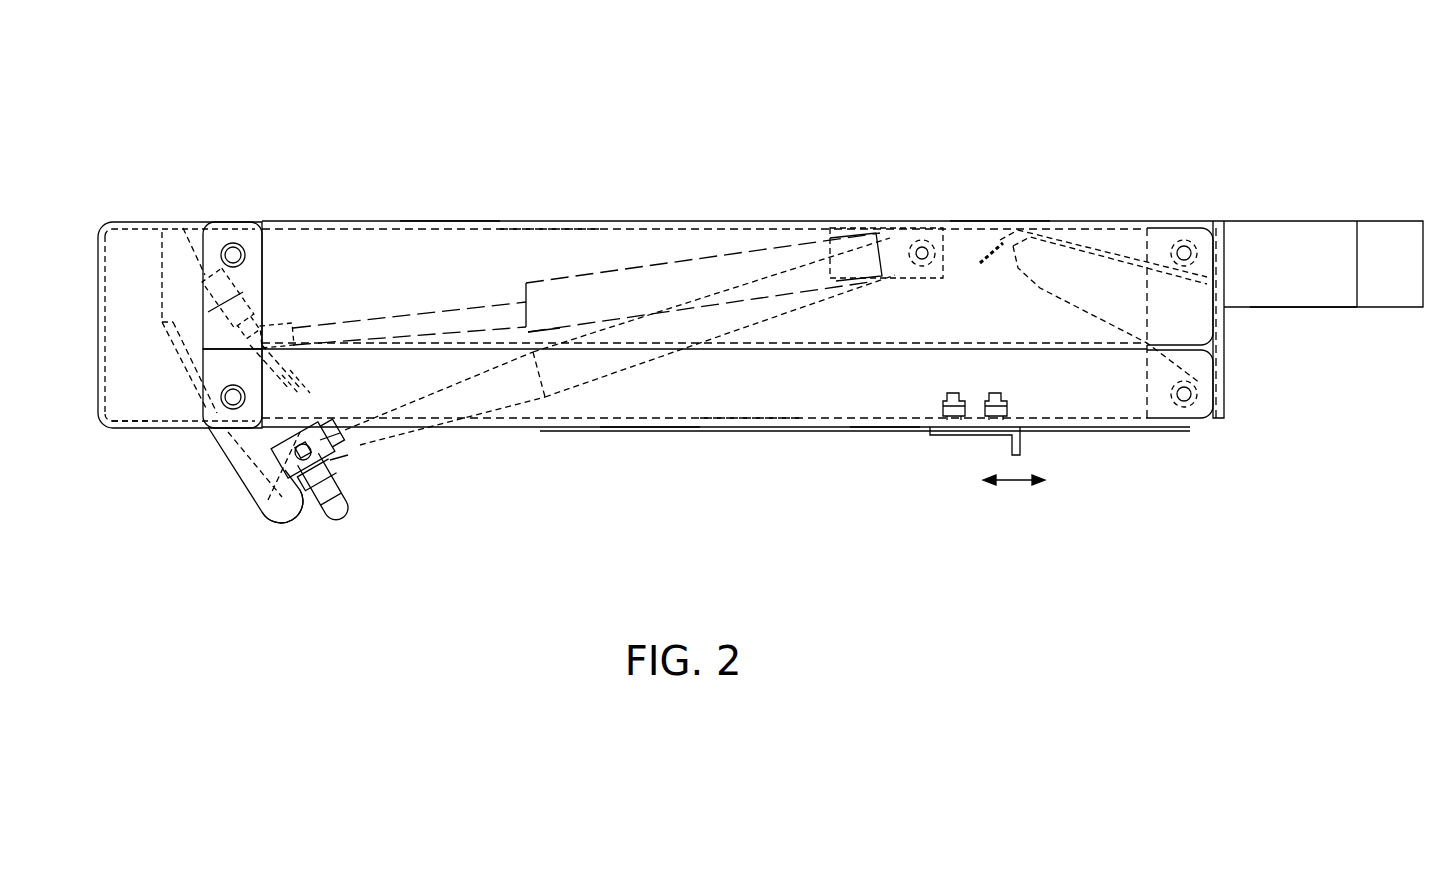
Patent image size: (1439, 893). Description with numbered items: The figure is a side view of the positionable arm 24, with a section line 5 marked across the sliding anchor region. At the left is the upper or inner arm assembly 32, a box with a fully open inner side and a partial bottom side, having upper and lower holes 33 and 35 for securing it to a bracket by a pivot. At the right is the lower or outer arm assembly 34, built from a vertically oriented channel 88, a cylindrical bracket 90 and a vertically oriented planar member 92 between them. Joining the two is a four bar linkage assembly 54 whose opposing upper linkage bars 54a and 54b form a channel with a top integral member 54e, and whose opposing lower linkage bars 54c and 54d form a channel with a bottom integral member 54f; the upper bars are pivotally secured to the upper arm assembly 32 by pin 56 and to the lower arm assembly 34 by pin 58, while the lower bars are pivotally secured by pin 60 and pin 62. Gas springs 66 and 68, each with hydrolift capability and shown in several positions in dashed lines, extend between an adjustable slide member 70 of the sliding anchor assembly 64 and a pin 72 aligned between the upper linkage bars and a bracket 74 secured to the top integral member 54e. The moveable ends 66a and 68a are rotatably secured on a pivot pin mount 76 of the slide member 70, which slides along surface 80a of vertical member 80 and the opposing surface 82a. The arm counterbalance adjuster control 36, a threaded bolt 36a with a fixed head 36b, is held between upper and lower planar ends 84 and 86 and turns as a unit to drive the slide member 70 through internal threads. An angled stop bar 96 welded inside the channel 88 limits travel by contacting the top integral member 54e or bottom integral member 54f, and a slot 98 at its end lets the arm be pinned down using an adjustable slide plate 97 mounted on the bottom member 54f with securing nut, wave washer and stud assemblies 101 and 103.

The positionable arm 24 is at (748, 92).
The section line 5- 5 is at (300, 100).
The upper arm assembly 32 is at (206, 206).
The upper hole 33 is at (138, 220).
The lower arm assembly 34 is at (1315, 192).
The lower hole 35 is at (150, 428).
The arm counterbalance adjuster control 36 is at (355, 508).
The threaded bolt 36a is at (248, 312).
The fixed head 36b is at (336, 512).
The four bar linkage assembly 54 is at (800, 196).
The upper linkage bar 54a is at (446, 243).
The upper linkage bar 54b is at (538, 243).
The lower linkage bar 54c is at (648, 405).
The lower linkage bar 54d is at (760, 400).
The top integral member 54e is at (990, 225).
The bottom integral member 54f is at (882, 430).
The pin 56 is at (236, 245).
The pin 58 is at (1187, 250).
The pin 60 is at (233, 405).
The pin 62 is at (1186, 400).
The sliding anchor assembly 64 is at (222, 543).
The gas spring 66 is at (607, 297).
The moveable end 66a is at (340, 450).
The gas spring 68 is at (668, 285).
The moveable end 68a is at (385, 438).
The adjustable slide member 70 is at (278, 322).
The pin 72 is at (915, 250).
The bracket 74 is at (948, 240).
The pivot pin mount 76 is at (262, 505).
The vertical member 80 is at (262, 465).
The surface 80a is at (265, 400).
The surface 82a is at (290, 392).
The upper planar end 84 is at (245, 315).
The lower planar end 86 is at (284, 505).
The channel 88 is at (1218, 345).
The cylindrical bracket 90 is at (1397, 245).
The planar member 92 is at (1320, 298).
The stop bar 96 is at (1060, 245).
The adjustable slide plate 97 is at (973, 437).
The slot 98 is at (998, 250).
The securing nut, wave washer, and stud assembly 101 is at (936, 392).
The securing nut, wave washer, and stud assembly 103 is at (1012, 394).